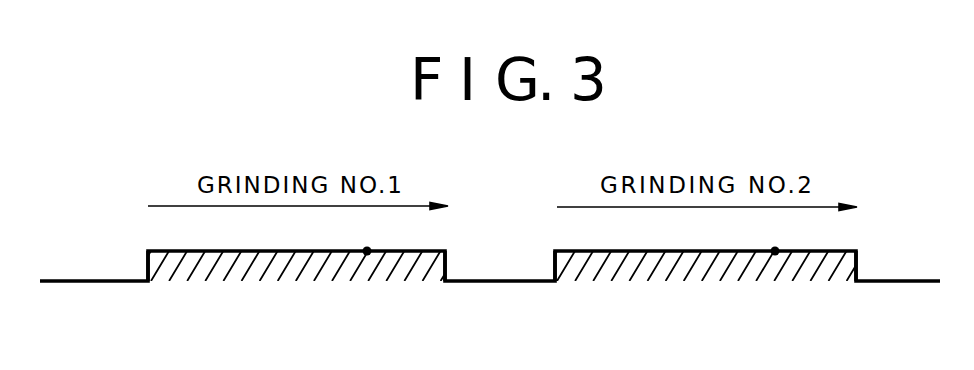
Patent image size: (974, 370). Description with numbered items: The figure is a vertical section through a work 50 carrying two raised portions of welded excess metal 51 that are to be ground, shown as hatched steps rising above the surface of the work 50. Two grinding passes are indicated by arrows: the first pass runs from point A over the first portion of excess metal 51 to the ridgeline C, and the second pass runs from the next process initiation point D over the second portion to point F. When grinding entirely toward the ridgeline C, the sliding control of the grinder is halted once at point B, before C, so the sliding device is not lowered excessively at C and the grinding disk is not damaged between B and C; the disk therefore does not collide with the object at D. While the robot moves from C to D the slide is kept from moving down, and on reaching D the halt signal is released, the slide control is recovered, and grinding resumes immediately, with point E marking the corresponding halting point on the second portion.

The work 50 is at (895, 282).
The welded excess metal 51 is at (856, 263).
The grinding start point A is at (146, 251).
The slide control halting point B is at (366, 239).
The ridgeline C is at (446, 251).
The next process initiation point D is at (557, 251).
The intermediate point of second grinding pass E is at (775, 239).
The end point of second grinding pass F is at (853, 251).